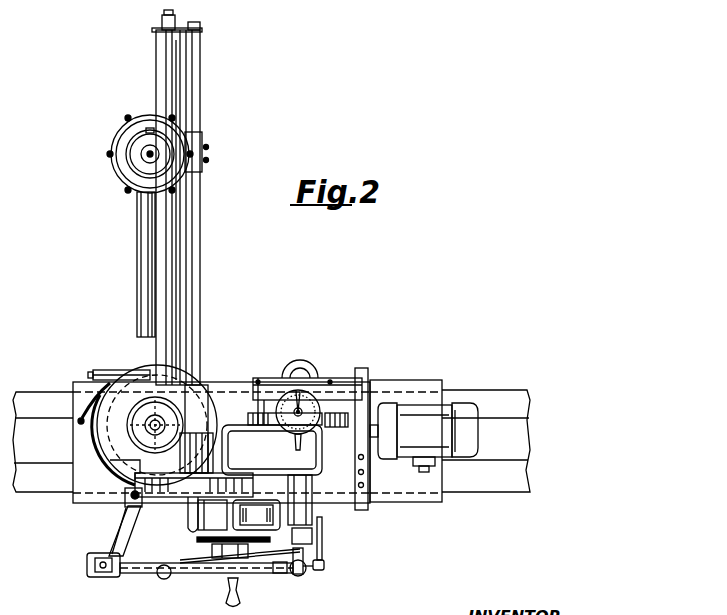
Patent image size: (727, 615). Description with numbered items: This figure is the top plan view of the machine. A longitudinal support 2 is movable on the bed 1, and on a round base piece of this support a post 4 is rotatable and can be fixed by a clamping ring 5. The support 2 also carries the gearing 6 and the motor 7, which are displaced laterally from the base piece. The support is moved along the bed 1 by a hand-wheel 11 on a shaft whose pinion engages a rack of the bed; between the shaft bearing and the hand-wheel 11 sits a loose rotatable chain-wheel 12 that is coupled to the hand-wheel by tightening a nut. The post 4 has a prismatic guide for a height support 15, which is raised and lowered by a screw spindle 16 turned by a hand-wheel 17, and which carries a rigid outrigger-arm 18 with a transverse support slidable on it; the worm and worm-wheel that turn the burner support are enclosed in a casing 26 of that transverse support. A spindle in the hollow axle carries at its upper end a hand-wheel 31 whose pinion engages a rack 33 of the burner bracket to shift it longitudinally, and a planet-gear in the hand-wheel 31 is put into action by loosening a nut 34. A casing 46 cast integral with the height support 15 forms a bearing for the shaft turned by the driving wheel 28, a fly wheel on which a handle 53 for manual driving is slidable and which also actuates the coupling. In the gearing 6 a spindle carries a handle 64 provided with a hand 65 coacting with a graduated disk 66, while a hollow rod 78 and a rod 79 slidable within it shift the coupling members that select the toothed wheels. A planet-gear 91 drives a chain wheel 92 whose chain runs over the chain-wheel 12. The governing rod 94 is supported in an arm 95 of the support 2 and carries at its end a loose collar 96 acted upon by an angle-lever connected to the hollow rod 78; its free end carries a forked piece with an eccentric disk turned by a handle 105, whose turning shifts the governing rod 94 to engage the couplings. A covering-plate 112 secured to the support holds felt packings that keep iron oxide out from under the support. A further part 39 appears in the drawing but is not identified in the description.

The bed 1 is at (36, 396).
The longitudinal support 2 is at (352, 493).
The post 4 is at (114, 430).
The clamping ring 5 is at (104, 456).
The gearing 6 is at (268, 380).
The motor 7 is at (420, 412).
The hand-wheel 11 is at (255, 576).
The chain-wheel 12 is at (225, 548).
The height support 15 is at (160, 386).
The screw spindle 16 is at (170, 421).
The hand-wheel 17 is at (205, 386).
The outrigger-arm 18 is at (181, 290).
The casing 26 is at (124, 173).
The driving wheel 28 is at (175, 496).
The hand-wheel 31 is at (127, 135).
The rack 33 is at (139, 251).
The nut 34 is at (157, 80).
The support leg 39 is at (279, 492).
The casing 46 is at (134, 498).
The handle 53 is at (189, 532).
The handle 64 is at (293, 438).
The hand 65 is at (307, 400).
The graduated disk 66 is at (320, 426).
The hollow rod 78 is at (313, 543).
The rod 79 is at (305, 572).
The planet-gear 91 is at (256, 515).
The chain wheel 92 is at (280, 574).
The governing rod 94 is at (145, 573).
The arm 95 is at (116, 540).
The loose collar 96 is at (325, 565).
The handle 105 is at (105, 576).
The covering-plate 112 is at (78, 496).